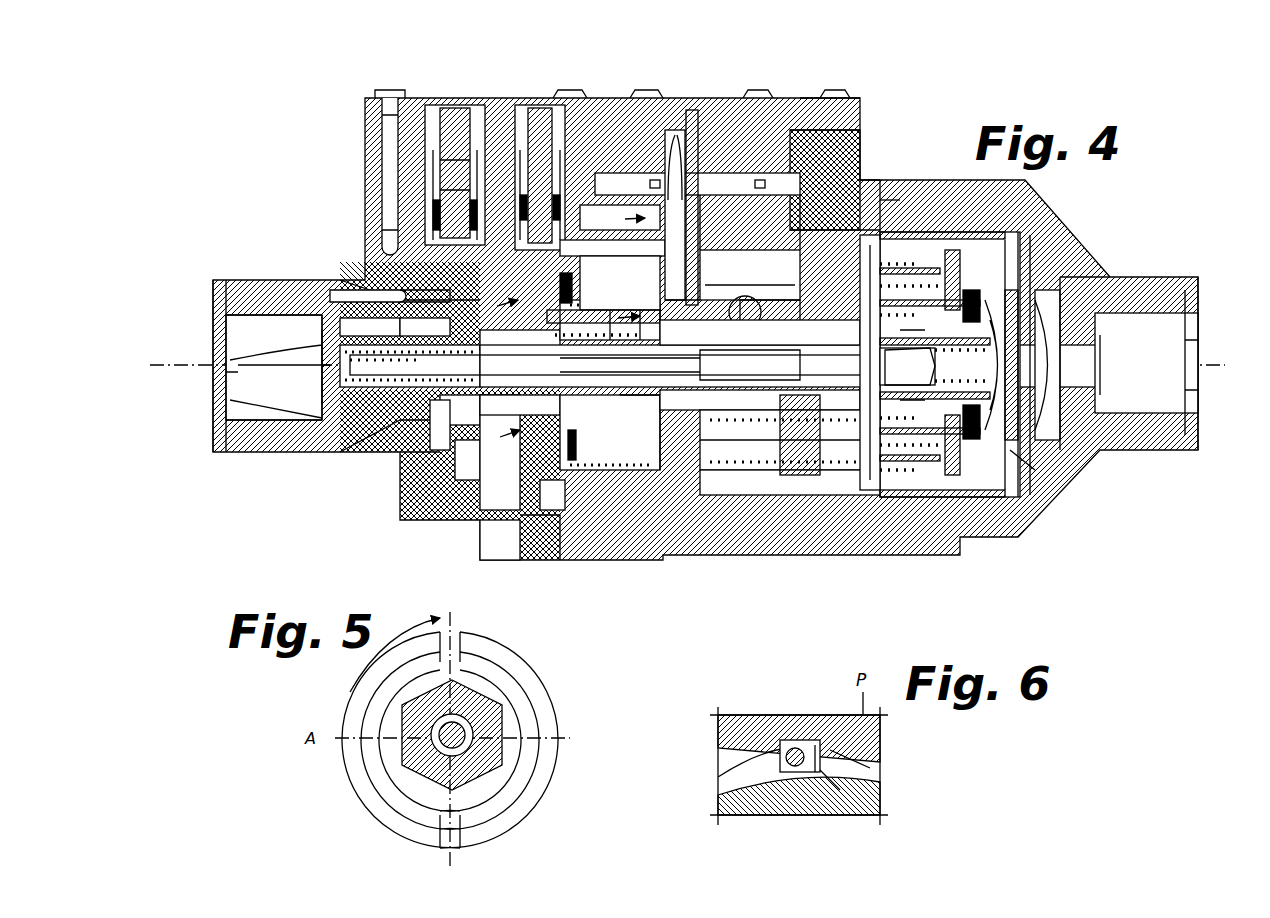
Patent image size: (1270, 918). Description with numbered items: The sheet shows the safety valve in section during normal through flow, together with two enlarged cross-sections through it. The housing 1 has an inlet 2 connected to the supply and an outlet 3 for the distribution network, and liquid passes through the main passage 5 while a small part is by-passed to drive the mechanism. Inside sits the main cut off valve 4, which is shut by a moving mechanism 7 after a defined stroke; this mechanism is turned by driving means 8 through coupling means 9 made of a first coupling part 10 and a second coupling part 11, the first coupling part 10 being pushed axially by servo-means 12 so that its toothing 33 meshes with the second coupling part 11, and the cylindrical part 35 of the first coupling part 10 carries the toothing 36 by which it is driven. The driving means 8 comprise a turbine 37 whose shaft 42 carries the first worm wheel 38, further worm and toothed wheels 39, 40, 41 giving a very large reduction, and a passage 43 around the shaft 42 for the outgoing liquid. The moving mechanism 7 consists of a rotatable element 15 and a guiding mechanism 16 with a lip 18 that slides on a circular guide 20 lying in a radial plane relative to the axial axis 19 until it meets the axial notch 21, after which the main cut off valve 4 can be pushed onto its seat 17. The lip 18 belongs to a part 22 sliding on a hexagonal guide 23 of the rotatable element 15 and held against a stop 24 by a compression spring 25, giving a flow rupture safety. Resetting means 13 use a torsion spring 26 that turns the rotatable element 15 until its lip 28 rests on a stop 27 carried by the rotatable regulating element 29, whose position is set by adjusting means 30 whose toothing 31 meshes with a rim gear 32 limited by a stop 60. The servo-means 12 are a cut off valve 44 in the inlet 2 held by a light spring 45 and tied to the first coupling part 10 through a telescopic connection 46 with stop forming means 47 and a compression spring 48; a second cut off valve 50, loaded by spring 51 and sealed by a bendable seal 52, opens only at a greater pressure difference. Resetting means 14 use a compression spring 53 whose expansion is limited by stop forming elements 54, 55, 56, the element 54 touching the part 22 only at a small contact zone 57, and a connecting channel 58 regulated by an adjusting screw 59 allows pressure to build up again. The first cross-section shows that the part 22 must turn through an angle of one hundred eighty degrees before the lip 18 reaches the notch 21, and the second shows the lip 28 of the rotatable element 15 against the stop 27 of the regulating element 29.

In FIG. 4, the housing 1 is at (366, 186).
In FIG. 4, the inlet 2 is at (1212, 332).
In FIG. 4, the outlet 3 is at (200, 340).
In FIG. 4, the main cut off valve 4 is at (595, 415).
In FIG. 4, the main passage 5 is at (762, 483).
In FIG. 4, the moving mechanism 7 is at (550, 512).
In FIG. 4, the driving means 8 is at (775, 175).
In FIG. 4, the coupling means 9 is at (695, 470).
In FIG. 4, the first coupling part 10 is at (705, 420).
In FIG. 4, the second coupling part 11 is at (652, 420).
In FIG. 4, the servo-means 12 is at (1045, 425).
In FIG. 4, the resetting means 13 is at (622, 470).
In FIG. 4, the resetting means 14 is at (345, 418).
In FIG. 4, the rotatable element 15 is at (612, 470).
In FIG. 6, the rotatable element 15 is at (882, 798).
In FIG. 4, the guiding mechanism 16 is at (432, 450).
In FIG. 4, the seat 17 is at (485, 545).
In FIG. 4, the lip 18 is at (452, 470).
In FIG. 5, the lip 18 is at (465, 828).
In FIG. 4, the axial axis 19 is at (1215, 375).
In FIG. 4, the circular guide 20 is at (425, 462).
In FIG. 4, the axial notch 21 is at (375, 318).
In FIG. 5, the axial notch 21 is at (470, 640).
In FIG. 4, the part 22 is at (362, 400).
In FIG. 5, the part 22 is at (516, 770).
In FIG. 4, the hexagonal guide 23 is at (420, 318).
In FIG. 5, the hexagonal guide 23 is at (505, 713).
In FIG. 4, the stop 24 is at (395, 440).
In FIG. 4, the compression spring 25 is at (485, 505).
In FIG. 4, the torsion spring 26 is at (668, 270).
In FIG. 4, the stop 27 is at (640, 260).
In FIG. 6, the stop 27 is at (720, 770).
In FIG. 4, the lip 28 is at (700, 110).
In FIG. 6, the lip 28 is at (865, 752).
In FIG. 4, the rotatable regulating element 29 is at (605, 100).
In FIG. 6, the rotatable regulating element 29 is at (752, 735).
In FIG. 4, the adjusting means 30 is at (537, 105).
In FIG. 4, the toothing 31 is at (497, 105).
In FIG. 4, the rim gear 32 is at (572, 105).
In FIG. 4, the toothing 33 is at (668, 420).
In FIG. 4, the cylindrical part 35 is at (790, 480).
In FIG. 4, the toothing 36 is at (880, 200).
In FIG. 4, the turbine 37 is at (860, 100).
In FIG. 4, the first worm wheel 38 is at (815, 110).
In FIG. 4, the worm and toothed wheel 39 is at (866, 130).
In FIG. 4, the worm and toothed wheel 40 is at (880, 170).
In FIG. 4, the worm and toothed wheel 41 is at (900, 150).
In FIG. 4, the shaft 42 is at (752, 300).
In FIG. 4, the passage 43 is at (722, 250).
In FIG. 4, the cut off valve 44 is at (1080, 287).
In FIG. 4, the spring 45 is at (948, 478).
In FIG. 4, the connection 46 is at (915, 400).
In FIG. 4, the stop forming means 47 is at (838, 410).
In FIG. 4, the compression spring 48 is at (1012, 470).
In FIG. 4, the second cut off valve 50 is at (1030, 212).
In FIG. 4, the spring 51 is at (950, 252).
In FIG. 4, the seal 52 is at (1040, 275).
In FIG. 4, the compression spring 53 is at (300, 400).
In FIG. 4, the stop forming element 54 is at (230, 285).
In FIG. 4, the stop forming element 55 is at (212, 375).
In FIG. 4, the stop forming element 56 is at (214, 408).
In FIG. 4, the contact zone 57 is at (300, 290).
In FIG. 4, the connecting channel 58 is at (400, 255).
In FIG. 4, the adjusting screw 59 is at (452, 100).
In FIG. 4, the stop 60 is at (530, 520).